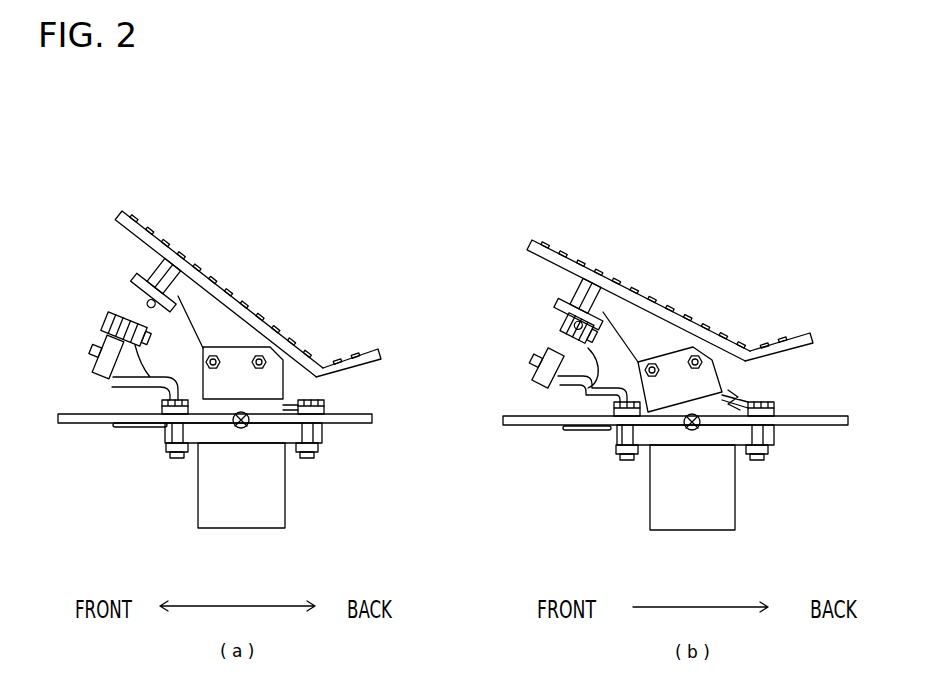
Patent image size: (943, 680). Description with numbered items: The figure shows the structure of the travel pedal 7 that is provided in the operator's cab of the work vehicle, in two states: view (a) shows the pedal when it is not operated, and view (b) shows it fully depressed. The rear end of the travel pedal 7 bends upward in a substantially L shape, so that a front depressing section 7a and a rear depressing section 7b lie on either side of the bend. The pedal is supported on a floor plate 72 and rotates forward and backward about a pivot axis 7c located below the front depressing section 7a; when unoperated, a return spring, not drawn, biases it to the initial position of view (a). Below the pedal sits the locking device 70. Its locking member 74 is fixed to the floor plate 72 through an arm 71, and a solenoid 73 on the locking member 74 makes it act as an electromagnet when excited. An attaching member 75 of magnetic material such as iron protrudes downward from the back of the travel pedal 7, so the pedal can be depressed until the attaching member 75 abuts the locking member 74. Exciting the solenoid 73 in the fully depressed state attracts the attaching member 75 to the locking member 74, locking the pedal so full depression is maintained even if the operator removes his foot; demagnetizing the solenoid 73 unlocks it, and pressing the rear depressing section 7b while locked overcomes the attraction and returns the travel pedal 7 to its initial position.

The travel pedal 7 is at (162, 229).
The front depressing section 7a is at (212, 272).
The rear depressing section 7b is at (356, 340).
The pivot axis 7c is at (250, 424).
The locking device 70 is at (65, 261).
The arm 71 is at (168, 400).
The floor plate 72 is at (352, 414).
The solenoid 73 is at (113, 320).
The locking member 74 is at (89, 338).
The attaching member 75 is at (160, 276).